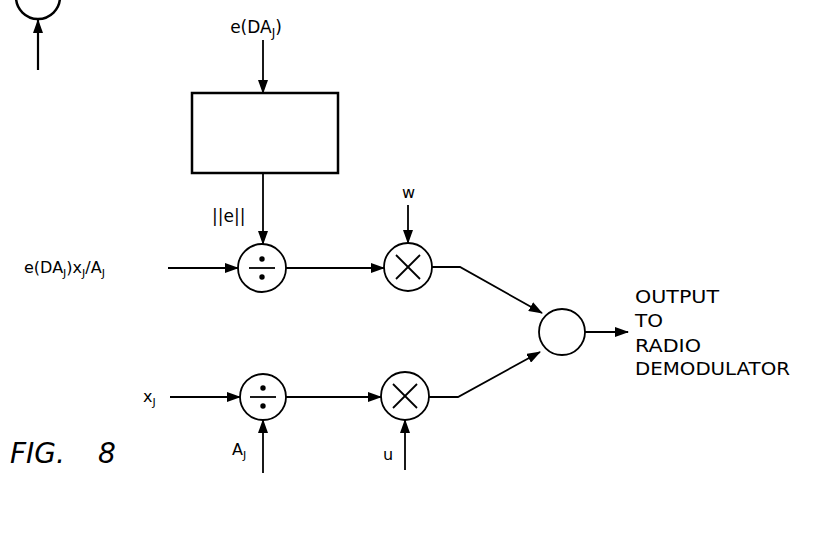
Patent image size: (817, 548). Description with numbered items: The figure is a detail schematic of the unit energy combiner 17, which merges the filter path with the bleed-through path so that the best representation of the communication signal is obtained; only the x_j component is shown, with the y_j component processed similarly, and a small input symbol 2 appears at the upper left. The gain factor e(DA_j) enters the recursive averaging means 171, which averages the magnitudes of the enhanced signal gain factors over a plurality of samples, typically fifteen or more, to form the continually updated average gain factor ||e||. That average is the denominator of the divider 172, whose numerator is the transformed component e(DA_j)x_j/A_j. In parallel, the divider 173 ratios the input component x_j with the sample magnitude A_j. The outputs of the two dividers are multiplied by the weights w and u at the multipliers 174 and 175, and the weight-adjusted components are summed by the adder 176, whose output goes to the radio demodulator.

The antenna/input 2 is at (33, 35).
The unit energy combiner 17 is at (363, 53).
The recursive averaging means 171 is at (295, 133).
The divider 172 is at (280, 286).
The divider 173 is at (281, 413).
The multiplier 174 is at (427, 285).
The multiplier 175 is at (431, 391).
The adder 176 is at (578, 352).